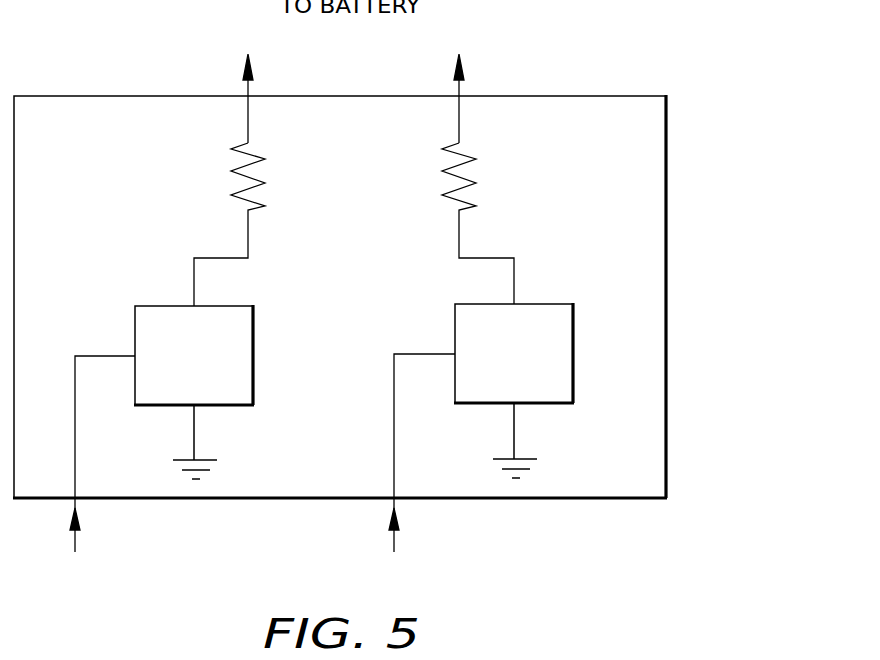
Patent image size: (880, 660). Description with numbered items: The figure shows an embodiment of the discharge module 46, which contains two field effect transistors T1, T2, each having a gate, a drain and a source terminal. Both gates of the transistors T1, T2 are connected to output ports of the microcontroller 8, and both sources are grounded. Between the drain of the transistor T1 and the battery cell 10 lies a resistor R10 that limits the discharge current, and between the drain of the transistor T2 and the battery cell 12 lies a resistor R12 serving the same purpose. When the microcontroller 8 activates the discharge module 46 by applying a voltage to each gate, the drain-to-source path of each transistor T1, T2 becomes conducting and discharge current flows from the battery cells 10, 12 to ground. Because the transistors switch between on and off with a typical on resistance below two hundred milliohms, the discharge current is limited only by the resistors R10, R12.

The discharge module 46 is at (666, 185).
The battery cell 10 is at (247, 85).
The battery cell 12 is at (456, 85).
The microcontroller 8 is at (231, 574).
The resistor R10 is at (253, 224).
The resistor R12 is at (482, 223).
The field effect transistor T1 is at (253, 350).
The field effect transistor T2 is at (573, 348).